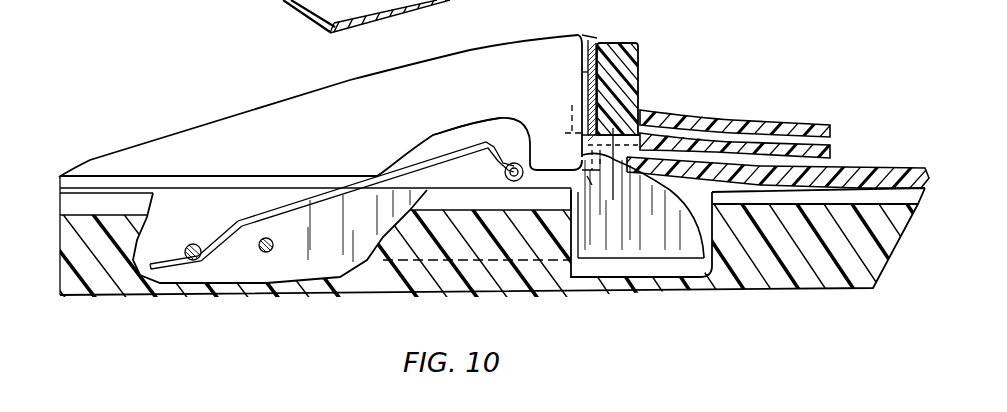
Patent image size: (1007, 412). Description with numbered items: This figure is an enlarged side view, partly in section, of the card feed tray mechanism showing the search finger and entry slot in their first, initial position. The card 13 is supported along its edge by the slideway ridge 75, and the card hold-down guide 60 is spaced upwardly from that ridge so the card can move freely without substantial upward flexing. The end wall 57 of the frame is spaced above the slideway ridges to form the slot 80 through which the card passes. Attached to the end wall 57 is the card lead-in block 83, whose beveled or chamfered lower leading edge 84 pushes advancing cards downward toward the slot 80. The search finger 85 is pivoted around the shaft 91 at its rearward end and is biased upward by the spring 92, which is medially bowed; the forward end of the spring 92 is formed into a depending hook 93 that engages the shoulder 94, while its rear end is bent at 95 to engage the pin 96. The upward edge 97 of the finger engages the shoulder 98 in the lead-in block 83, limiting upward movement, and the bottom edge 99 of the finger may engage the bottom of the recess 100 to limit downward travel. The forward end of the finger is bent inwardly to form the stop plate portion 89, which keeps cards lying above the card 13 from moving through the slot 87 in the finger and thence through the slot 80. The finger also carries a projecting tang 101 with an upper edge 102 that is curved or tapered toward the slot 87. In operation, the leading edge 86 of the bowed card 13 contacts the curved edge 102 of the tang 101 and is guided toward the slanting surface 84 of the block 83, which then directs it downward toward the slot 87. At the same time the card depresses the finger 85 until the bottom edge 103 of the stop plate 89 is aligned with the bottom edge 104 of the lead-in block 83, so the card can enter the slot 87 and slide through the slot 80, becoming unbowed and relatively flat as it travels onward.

The card 13 is at (842, 183).
The end wall 57 is at (592, 43).
The card hold-down guide 60 is at (438, 107).
The slideway ridge 75 is at (525, 199).
The card entry slot 80 is at (582, 182).
The card lead-in block 83 is at (623, 43).
The beveled lower leading edge 84 is at (720, 137).
The search finger 85 is at (605, 239).
The leading edge of the card 86 is at (682, 133).
The slot in search finger 87 is at (582, 155).
The stop plate portion 89 is at (647, 112).
The shaft 91 is at (272, 247).
The spring 92 is at (303, 197).
The depending hook 93 is at (510, 157).
The shoulder 94 is at (518, 157).
The bent rear end of spring 95 is at (237, 225).
The pin 96 is at (200, 247).
The upward edge of the finger 97 is at (566, 113).
The shoulder in lead-in block 98 is at (617, 133).
The bottom edge of the finger 99 is at (660, 253).
The recess 100 is at (607, 268).
The projecting tang 101 is at (667, 239).
The upper edge of tang 102 is at (703, 200).
The bottom edge of stop plate 103 is at (583, 72).
The bottom edge of lead-in block 104 is at (590, 186).